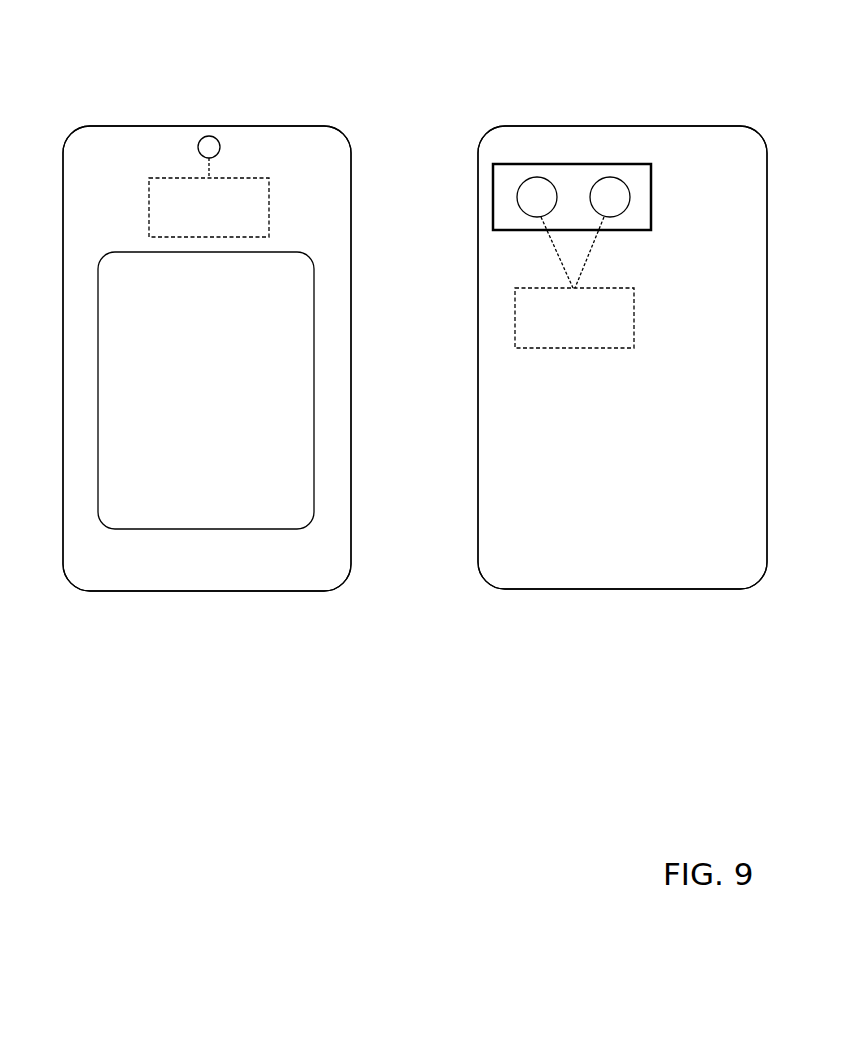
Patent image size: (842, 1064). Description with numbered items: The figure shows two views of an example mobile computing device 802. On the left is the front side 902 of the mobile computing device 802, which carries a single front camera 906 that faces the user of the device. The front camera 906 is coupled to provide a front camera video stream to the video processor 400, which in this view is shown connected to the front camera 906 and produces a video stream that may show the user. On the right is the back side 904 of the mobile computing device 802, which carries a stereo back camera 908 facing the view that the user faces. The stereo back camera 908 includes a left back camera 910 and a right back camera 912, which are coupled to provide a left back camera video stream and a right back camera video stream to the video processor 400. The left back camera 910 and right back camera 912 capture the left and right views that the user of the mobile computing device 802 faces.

The front side 902 is at (162, 50).
The back side 904 is at (575, 48).
The front camera 906 is at (215, 137).
The stereo back camera 908 is at (653, 210).
The left back camera 910 is at (537, 175).
The right back camera 912 is at (608, 175).
The video processor 400 is at (265, 205).
The mobile computing device 802 is at (138, 591).